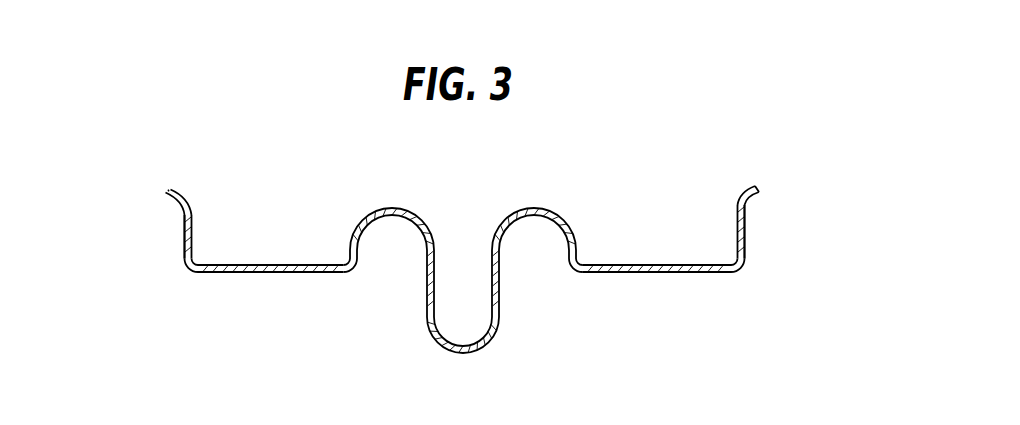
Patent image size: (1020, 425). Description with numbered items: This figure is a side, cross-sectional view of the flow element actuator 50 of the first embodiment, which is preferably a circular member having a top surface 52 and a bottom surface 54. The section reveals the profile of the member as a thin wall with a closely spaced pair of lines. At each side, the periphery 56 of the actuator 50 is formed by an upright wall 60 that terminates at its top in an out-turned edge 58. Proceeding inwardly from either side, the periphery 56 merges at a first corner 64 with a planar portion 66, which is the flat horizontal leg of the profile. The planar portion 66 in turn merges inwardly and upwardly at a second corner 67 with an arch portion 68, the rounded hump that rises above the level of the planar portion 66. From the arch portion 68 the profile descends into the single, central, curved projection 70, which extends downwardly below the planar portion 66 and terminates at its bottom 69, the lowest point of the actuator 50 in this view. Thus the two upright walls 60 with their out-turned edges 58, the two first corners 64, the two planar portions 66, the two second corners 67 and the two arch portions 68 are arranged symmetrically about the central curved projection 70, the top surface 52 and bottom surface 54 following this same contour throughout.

The flow element actuator 50 is at (168, 133).
The top surface 52 is at (595, 265).
The bottom surface 54 is at (595, 273).
The periphery 56 is at (157, 240).
The out-turned edge 58 is at (162, 193).
The upright wall 60 is at (191, 224).
The first corner 64 is at (188, 274).
The planar portion 66 is at (255, 273).
The second corner 67 is at (348, 274).
The arch portion 68 is at (393, 208).
The bottom 69 is at (463, 353).
The curved projection 70 is at (495, 288).